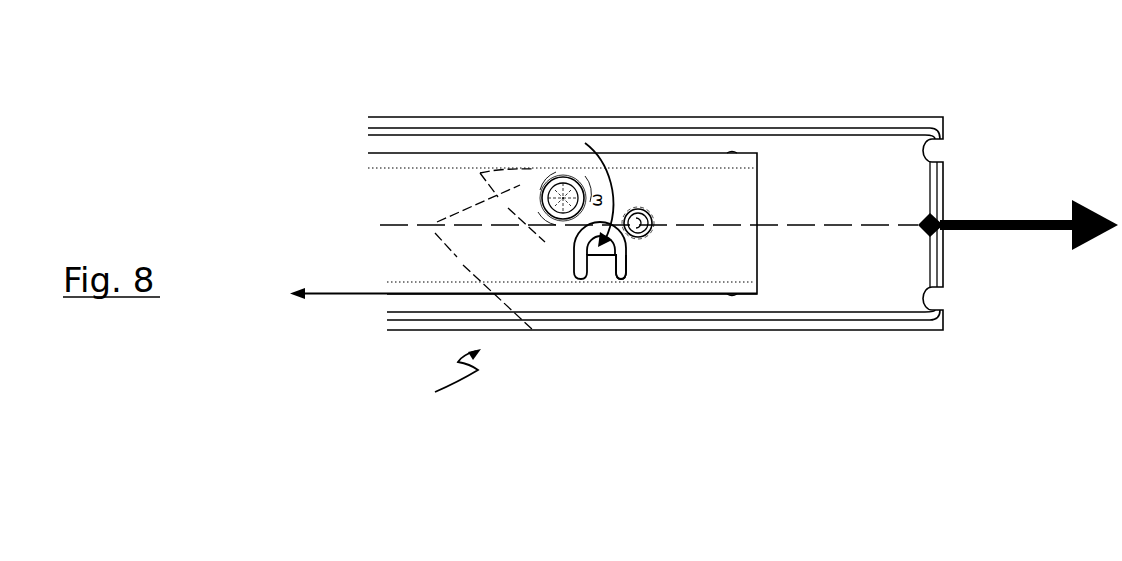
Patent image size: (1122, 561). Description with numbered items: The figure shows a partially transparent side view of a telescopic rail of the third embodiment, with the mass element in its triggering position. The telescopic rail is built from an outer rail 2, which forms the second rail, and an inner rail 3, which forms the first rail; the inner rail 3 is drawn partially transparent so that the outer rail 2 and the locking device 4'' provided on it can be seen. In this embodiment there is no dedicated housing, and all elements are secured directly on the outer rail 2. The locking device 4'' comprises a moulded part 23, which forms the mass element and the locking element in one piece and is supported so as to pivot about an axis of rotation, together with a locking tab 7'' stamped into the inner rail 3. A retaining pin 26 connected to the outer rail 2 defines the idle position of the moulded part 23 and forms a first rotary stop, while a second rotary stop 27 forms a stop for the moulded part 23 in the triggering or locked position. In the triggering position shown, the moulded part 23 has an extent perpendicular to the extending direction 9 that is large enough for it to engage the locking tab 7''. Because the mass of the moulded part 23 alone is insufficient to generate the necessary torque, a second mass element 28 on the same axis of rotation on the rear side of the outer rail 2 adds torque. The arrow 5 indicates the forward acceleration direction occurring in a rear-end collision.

The outer rail 2 is at (808, 193).
The inner rail 3 is at (385, 192).
The arrow 5 is at (1002, 233).
The extending direction 9 is at (355, 294).
The moulded part 23 is at (561, 240).
The locking tab 7'' is at (618, 336).
The retaining pin 26 is at (639, 211).
The second rotary stop 27 is at (500, 168).
The second mass element 28 is at (478, 242).
The locking device 4'' is at (446, 386).